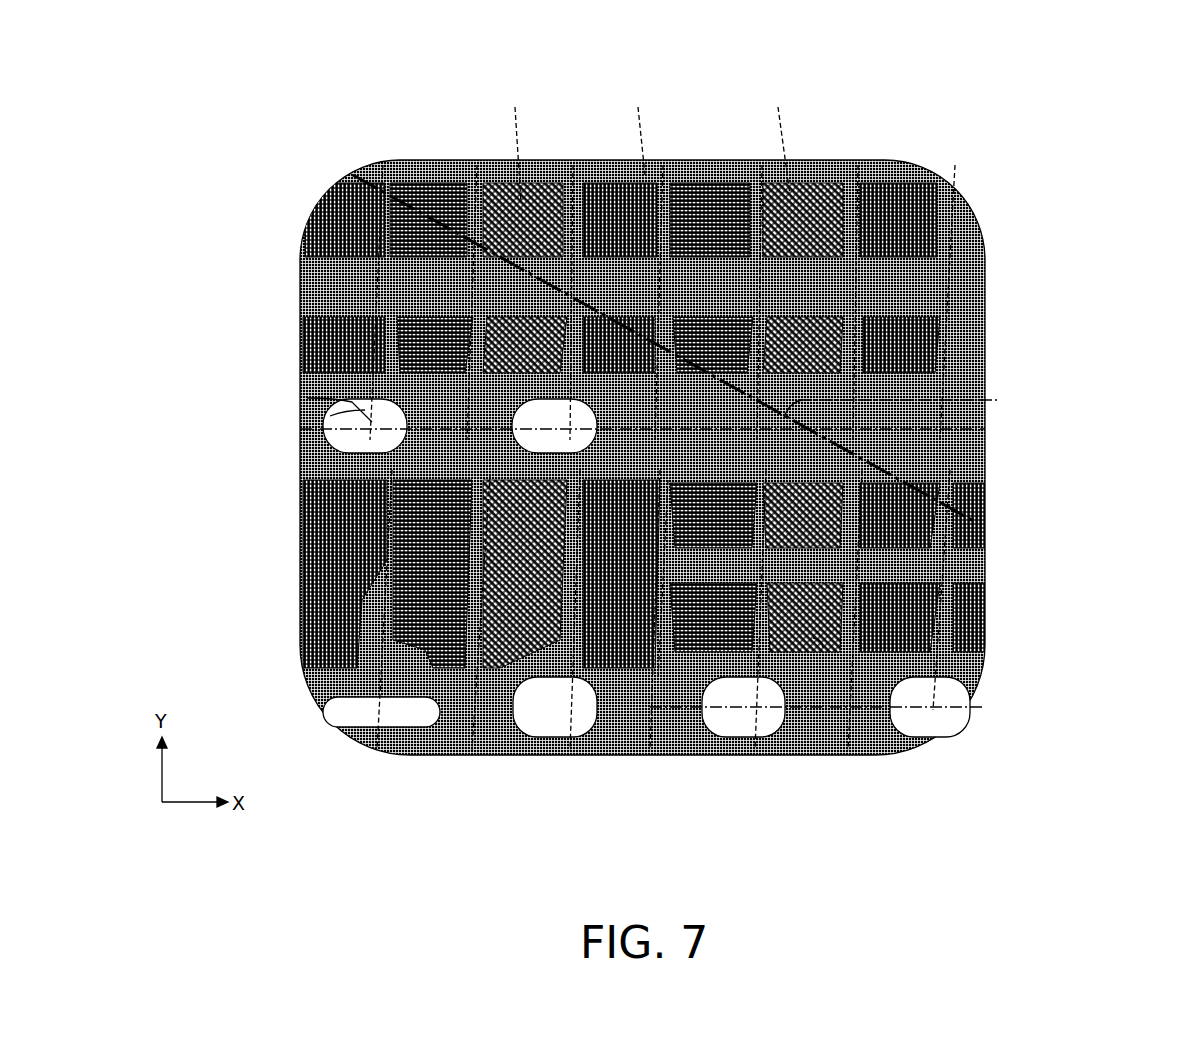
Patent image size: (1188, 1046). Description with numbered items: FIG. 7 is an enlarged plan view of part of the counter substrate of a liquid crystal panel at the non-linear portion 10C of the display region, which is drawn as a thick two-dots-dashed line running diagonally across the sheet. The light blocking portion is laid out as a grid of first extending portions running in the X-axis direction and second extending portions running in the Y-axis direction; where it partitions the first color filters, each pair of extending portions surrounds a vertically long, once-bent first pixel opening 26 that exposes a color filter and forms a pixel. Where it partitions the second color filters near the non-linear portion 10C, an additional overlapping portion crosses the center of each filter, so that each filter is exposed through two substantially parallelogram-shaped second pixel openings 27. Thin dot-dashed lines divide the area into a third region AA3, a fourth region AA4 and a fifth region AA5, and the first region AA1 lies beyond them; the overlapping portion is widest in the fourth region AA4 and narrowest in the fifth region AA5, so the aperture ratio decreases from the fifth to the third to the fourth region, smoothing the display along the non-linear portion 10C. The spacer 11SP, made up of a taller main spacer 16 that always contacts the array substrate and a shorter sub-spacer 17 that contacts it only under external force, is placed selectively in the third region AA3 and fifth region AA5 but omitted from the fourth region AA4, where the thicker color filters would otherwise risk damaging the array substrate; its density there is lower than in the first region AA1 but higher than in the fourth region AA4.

The non-linear portion 10C is at (990, 405).
The spacer 11SP is at (427, 808).
The main spacer 16 is at (382, 712).
The sub-spacer 17 is at (545, 447).
The first pixel opening 26 is at (400, 587).
The second pixel opening 27 is at (810, 648).
The first region AA1 is at (330, 413).
The third region AA3 is at (345, 403).
The fourth region AA4 is at (987, 432).
The fifth region AA5 is at (743, 707).